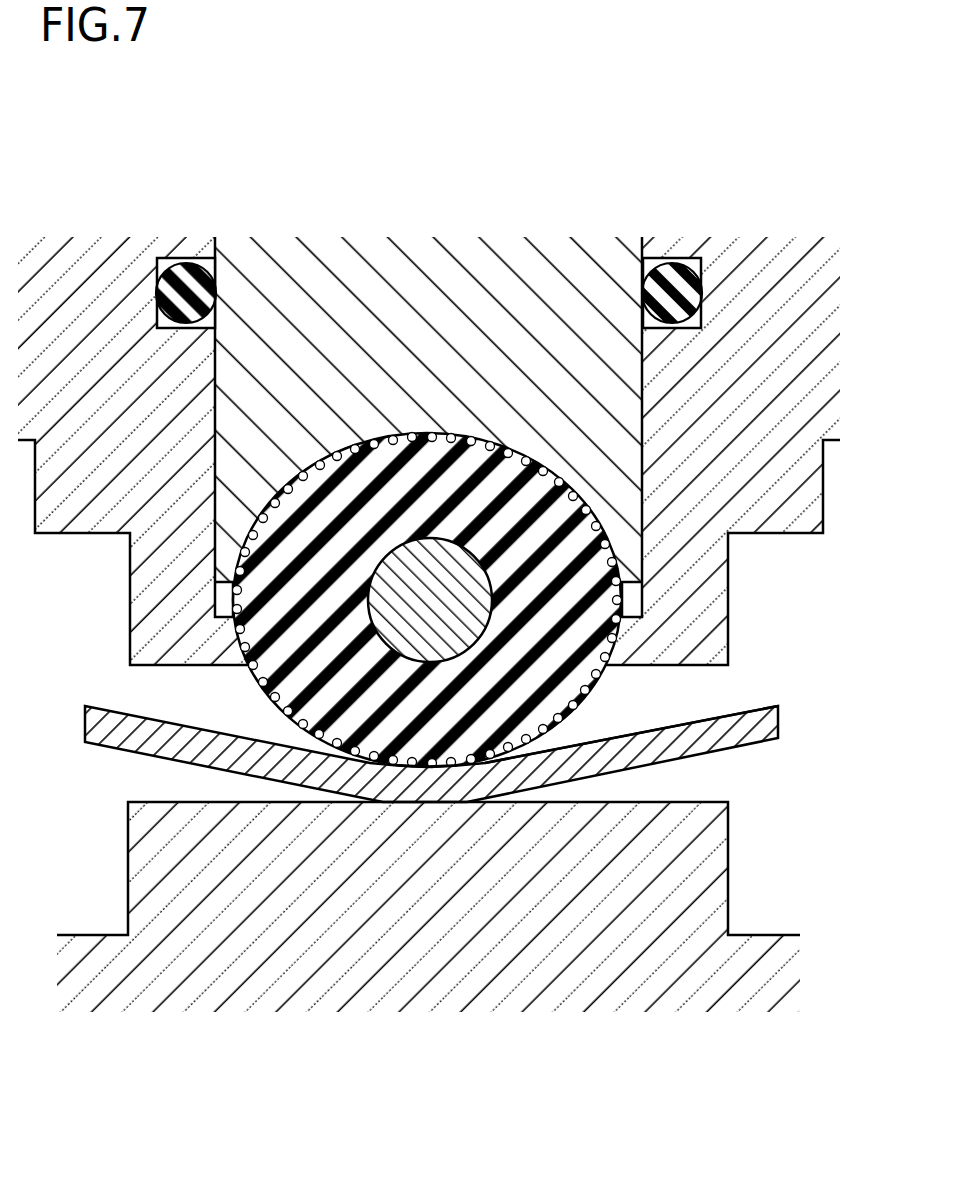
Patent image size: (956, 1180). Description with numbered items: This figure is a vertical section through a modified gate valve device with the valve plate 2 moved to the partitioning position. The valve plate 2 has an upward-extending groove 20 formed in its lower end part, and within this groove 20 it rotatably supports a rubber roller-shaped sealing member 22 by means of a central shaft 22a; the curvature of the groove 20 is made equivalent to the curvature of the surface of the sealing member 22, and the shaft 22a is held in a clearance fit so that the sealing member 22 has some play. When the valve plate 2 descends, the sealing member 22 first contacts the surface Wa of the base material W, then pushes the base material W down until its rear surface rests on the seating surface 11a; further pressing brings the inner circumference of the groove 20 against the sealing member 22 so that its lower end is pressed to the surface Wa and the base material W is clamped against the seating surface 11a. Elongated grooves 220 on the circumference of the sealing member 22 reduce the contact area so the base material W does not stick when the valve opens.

The valve plate 2 is at (449, 270).
The groove 20 is at (432, 430).
The sealing member 22 is at (381, 600).
The shaft 22a is at (417, 595).
The grooves 220 is at (586, 700).
The base material W is at (442, 715).
The surface Wa is at (574, 744).
The seating surface 11a is at (657, 800).